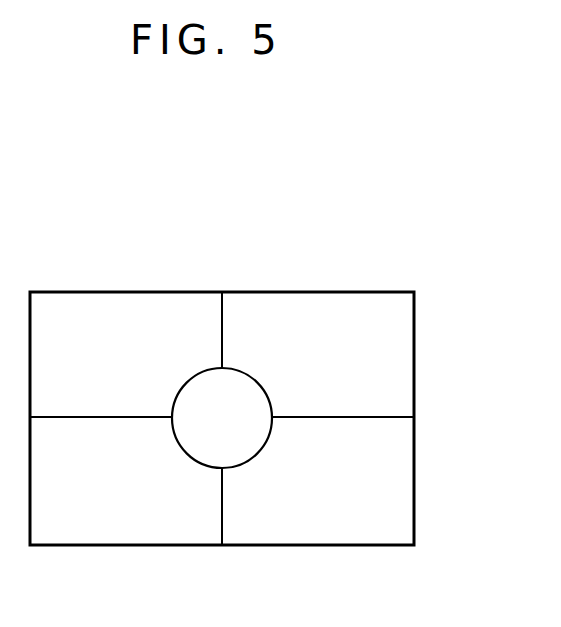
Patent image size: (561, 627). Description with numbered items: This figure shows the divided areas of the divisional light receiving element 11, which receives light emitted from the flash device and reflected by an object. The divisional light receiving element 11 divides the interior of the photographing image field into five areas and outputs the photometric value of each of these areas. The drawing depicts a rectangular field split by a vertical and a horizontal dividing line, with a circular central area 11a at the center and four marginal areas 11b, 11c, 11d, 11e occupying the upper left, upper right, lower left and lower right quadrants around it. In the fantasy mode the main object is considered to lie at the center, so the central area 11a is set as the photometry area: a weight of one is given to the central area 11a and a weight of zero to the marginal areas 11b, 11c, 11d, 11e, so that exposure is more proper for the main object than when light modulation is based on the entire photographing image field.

The divisional light receiving element 11 is at (416, 370).
The central focus detection area 11a is at (239, 385).
The upper left area 11b is at (134, 326).
The upper right area 11c is at (362, 313).
The lower left area 11d is at (128, 533).
The lower right area 11e is at (323, 535).